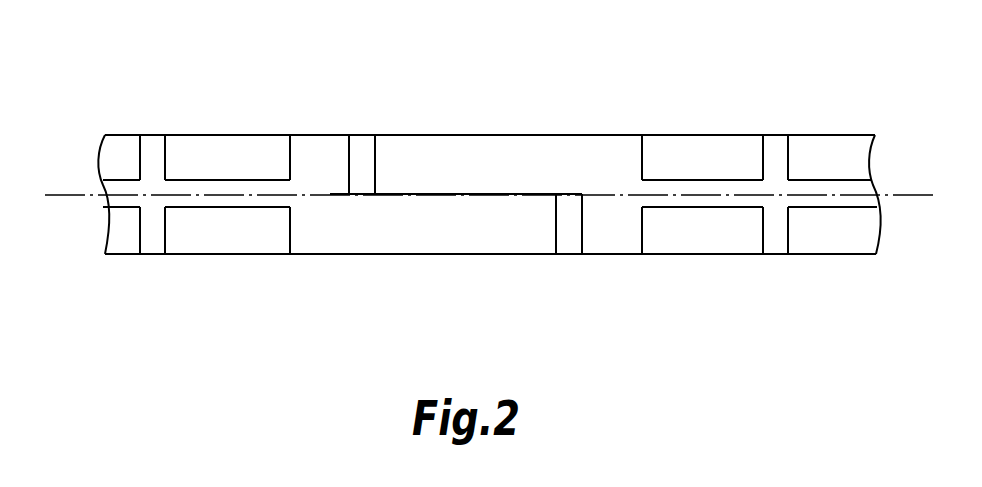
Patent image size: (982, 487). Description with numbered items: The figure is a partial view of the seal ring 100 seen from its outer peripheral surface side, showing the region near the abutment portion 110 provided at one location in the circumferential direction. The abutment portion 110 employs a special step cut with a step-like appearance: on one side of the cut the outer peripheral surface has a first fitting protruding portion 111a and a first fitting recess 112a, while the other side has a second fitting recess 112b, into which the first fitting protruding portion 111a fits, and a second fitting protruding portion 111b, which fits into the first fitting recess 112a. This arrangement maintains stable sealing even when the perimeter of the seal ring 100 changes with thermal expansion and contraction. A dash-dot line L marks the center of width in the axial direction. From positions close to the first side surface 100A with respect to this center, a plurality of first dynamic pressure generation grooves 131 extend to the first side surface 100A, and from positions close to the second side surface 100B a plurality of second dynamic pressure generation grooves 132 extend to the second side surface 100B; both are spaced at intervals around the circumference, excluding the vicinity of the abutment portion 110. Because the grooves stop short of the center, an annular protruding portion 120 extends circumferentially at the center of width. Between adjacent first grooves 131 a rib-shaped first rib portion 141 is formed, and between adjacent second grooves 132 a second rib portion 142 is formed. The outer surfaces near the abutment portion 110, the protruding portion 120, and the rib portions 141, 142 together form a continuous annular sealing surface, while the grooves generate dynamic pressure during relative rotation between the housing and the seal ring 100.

The seal ring 100 is at (139, 92).
The first side surface 100A is at (232, 255).
The second side surface 100B is at (212, 135).
The abutment portion 110 is at (498, 94).
The first fitting protruding portion 111a is at (435, 153).
The second fitting protruding portion 111b is at (489, 235).
The first fitting recess 112a is at (569, 233).
The second fitting recess 112b is at (358, 150).
The protruding portion 120 is at (678, 193).
The first dynamic pressure generation groove 131 is at (723, 237).
The second dynamic pressure generation groove 132 is at (723, 153).
The first rib portion 141 is at (782, 235).
The second rib portion 142 is at (783, 153).
The center of width L is at (60, 192).